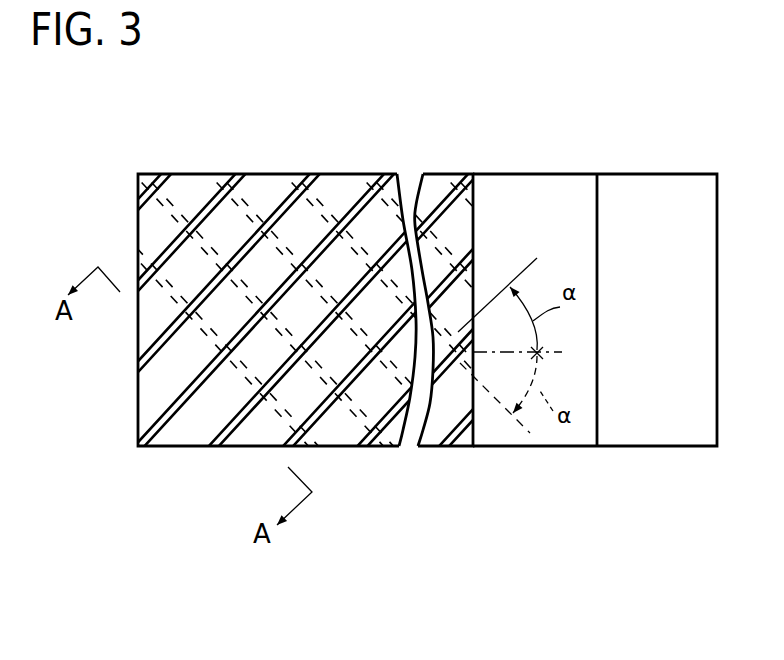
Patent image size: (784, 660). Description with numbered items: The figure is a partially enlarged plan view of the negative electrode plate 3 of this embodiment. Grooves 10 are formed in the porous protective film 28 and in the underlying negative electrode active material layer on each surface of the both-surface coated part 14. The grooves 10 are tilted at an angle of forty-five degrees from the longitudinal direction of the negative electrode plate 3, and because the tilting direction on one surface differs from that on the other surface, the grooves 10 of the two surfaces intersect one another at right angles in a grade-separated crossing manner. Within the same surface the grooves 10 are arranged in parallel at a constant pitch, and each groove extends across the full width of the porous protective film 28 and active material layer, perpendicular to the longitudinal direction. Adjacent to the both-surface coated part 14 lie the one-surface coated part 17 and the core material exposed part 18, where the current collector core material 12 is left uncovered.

The grooves 10 is at (308, 258).
The porous protective film 28 is at (337, 192).
The both-surface coated part 14 is at (433, 173).
The negative electrode plate 3 is at (498, 173).
The one-surface coated part 17 is at (563, 173).
The core material exposed part 18 is at (670, 173).
The current collector core material 12 is at (692, 327).